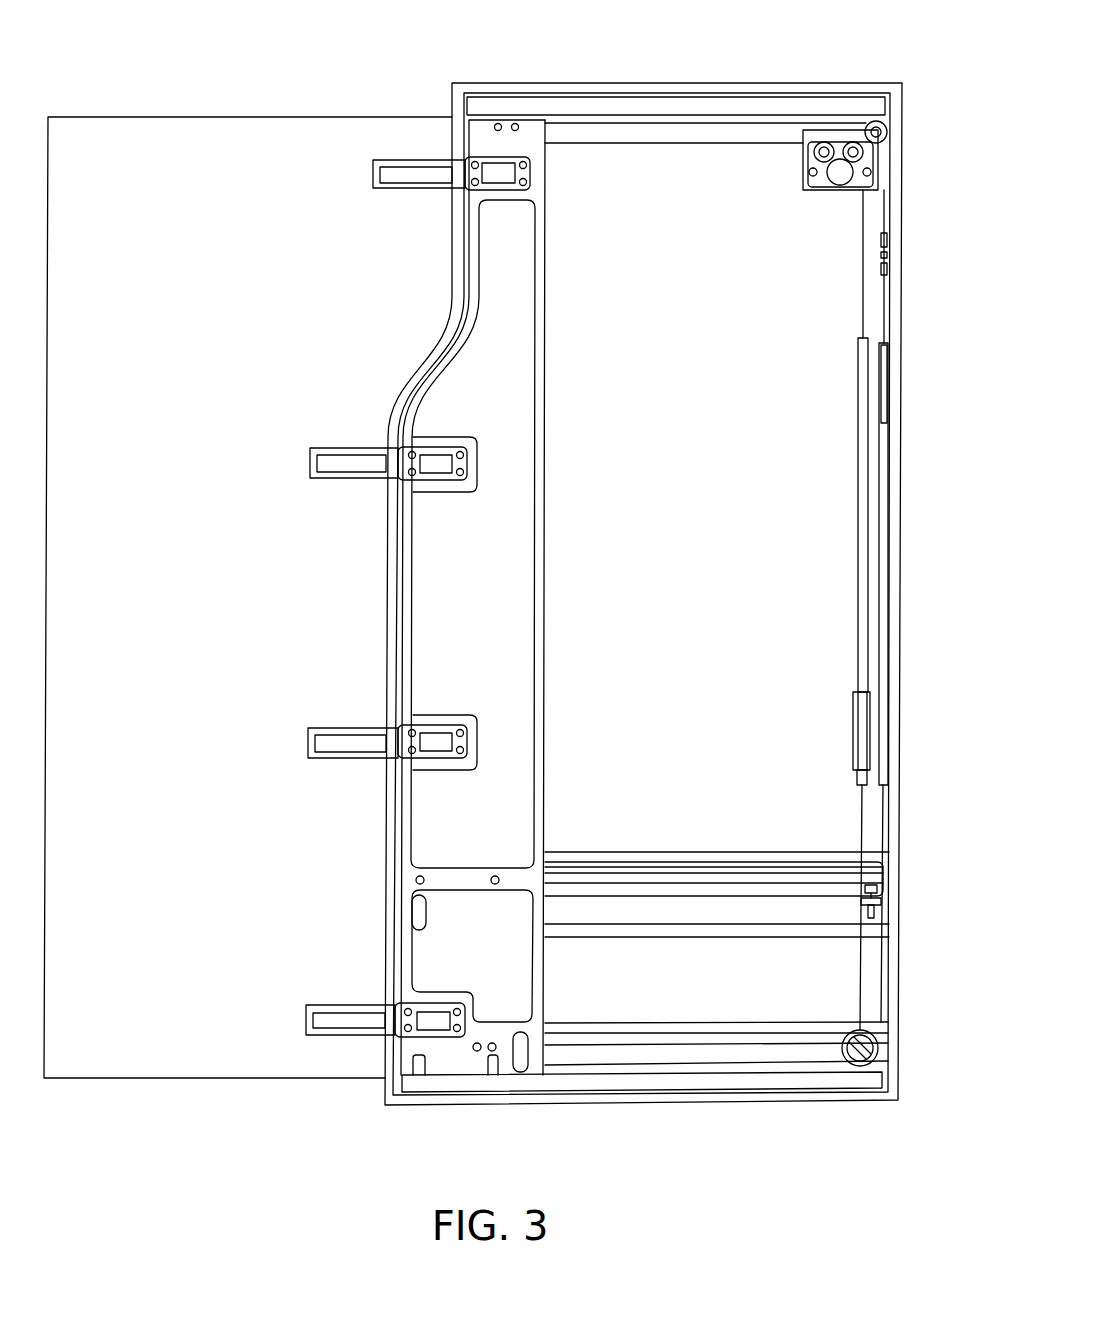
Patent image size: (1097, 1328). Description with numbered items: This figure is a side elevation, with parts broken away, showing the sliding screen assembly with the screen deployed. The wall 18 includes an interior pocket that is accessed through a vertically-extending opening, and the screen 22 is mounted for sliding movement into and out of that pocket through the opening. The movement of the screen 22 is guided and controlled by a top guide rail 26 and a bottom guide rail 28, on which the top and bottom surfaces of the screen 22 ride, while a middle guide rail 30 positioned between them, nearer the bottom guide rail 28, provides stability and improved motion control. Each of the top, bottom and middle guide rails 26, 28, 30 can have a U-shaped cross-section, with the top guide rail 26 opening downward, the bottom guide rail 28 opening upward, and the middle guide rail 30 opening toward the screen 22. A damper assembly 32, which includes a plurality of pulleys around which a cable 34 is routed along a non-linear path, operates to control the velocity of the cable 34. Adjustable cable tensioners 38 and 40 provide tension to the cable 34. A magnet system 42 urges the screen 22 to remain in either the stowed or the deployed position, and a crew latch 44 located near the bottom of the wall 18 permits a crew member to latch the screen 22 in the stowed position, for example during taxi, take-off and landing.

The wall 18 is at (690, 170).
The screen 22 is at (170, 147).
The top guide rail 26 is at (790, 108).
The bottom guide rail 28 is at (715, 1060).
The middle guide rail 30 is at (827, 888).
The damper assembly 32 is at (872, 160).
The cable 34 is at (881, 320).
The adjustable cable tensioner 38 is at (886, 253).
The adjustable cable tensioner 40 is at (858, 360).
The magnet system 42 is at (883, 479).
The crew latch 44 is at (858, 1058).